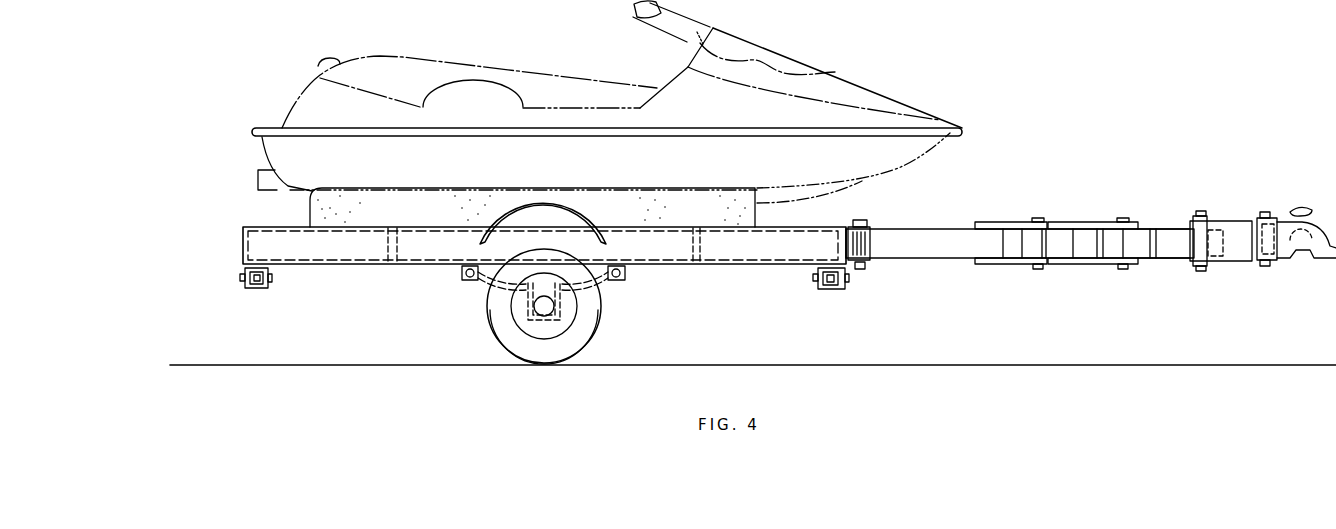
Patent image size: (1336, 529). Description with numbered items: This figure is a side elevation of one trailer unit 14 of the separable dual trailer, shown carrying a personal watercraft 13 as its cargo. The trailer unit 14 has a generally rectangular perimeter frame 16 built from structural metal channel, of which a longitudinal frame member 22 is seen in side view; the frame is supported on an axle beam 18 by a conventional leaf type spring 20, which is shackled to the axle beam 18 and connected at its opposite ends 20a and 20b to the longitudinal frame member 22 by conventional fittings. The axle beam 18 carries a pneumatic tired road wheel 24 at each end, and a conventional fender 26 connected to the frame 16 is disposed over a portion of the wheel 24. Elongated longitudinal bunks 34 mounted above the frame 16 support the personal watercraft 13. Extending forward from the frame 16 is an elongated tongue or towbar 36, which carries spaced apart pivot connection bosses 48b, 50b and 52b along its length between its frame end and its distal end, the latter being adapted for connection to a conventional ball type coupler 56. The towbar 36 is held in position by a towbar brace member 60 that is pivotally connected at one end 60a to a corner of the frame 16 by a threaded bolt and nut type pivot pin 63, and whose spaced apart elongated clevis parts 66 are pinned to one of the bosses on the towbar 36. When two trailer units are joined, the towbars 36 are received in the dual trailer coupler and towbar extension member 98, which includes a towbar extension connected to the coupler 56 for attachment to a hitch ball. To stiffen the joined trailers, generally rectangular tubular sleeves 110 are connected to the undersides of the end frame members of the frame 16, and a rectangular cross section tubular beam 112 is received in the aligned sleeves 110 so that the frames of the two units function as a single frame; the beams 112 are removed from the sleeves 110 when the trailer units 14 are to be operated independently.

The personal watercraft 13 is at (836, 70).
The trailer unit 14 is at (243, 247).
The perimeter frame 16 is at (322, 265).
The axle beam 18 is at (550, 312).
The spring 20 is at (490, 280).
The spring end 20a is at (462, 276).
The spring end 20b is at (620, 280).
The longitudinal frame member 22 is at (378, 250).
The road wheel 24 is at (516, 338).
The fender 26 is at (554, 200).
The bunk 34 is at (658, 198).
The towbar 36 is at (1170, 230).
The pivot connection boss 48b is at (1158, 248).
The pivot connection boss 50b is at (1090, 248).
The pivot connection boss 52b is at (1032, 248).
The ball type coupler 56 is at (1302, 222).
The towbar brace member 60 is at (920, 246).
The brace member end 60a is at (867, 262).
The pivot pin 63 is at (868, 222).
The clevis parts 66 is at (1002, 222).
The dual trailer coupler and towbar extension member 98 is at (1230, 222).
The tubular sleeve 110 is at (245, 290).
The tubular beam 112 is at (258, 290).